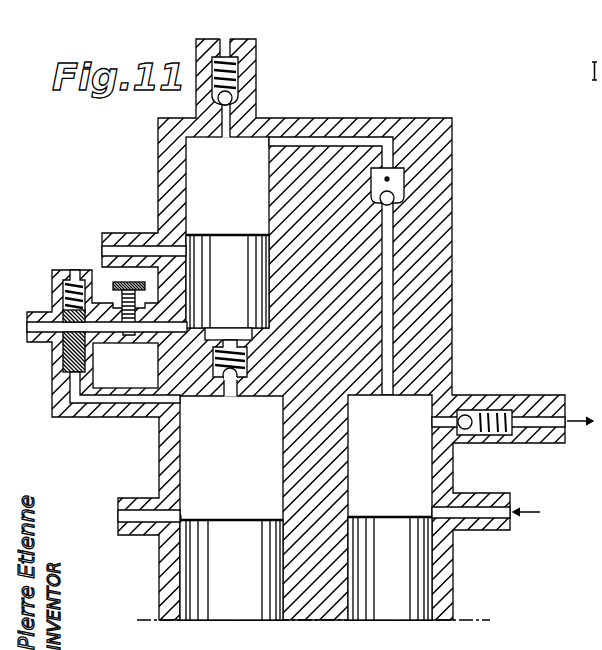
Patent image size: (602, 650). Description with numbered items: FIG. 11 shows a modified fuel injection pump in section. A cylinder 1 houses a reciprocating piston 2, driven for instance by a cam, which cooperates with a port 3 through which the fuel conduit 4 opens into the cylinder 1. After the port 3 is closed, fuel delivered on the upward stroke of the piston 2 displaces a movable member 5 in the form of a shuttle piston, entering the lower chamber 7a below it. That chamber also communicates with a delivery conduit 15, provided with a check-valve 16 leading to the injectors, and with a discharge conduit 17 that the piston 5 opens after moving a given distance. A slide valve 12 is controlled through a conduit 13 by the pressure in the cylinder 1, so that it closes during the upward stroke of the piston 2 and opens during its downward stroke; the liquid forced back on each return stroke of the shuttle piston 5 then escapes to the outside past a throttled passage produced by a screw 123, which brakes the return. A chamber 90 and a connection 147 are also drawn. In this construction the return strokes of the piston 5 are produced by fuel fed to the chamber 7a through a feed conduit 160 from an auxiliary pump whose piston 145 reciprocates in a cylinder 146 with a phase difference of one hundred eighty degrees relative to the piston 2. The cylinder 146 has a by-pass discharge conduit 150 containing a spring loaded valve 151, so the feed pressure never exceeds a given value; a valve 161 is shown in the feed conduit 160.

The cylinder 1 is at (190, 454).
The piston 2 is at (236, 576).
The port 3 is at (182, 518).
The fuel conduit 4 is at (128, 518).
The movable member 5 is at (235, 293).
The lower chamber 7a is at (186, 190).
The valve 12 is at (66, 364).
The conduit 13 is at (97, 401).
The delivery conduit 15 is at (226, 132).
The check-valve 16 is at (233, 100).
The discharge conduit 17 is at (135, 250).
The chamber 90 is at (145, 326).
The screw 123 is at (114, 283).
The piston 145 is at (407, 566).
The cylinder 146 is at (417, 469).
The inlet 147 is at (475, 514).
The discharge conduit 150 is at (459, 411).
The spring loaded valve 151 is at (469, 431).
The feed conduit 160 is at (343, 137).
The valve 161 is at (405, 196).